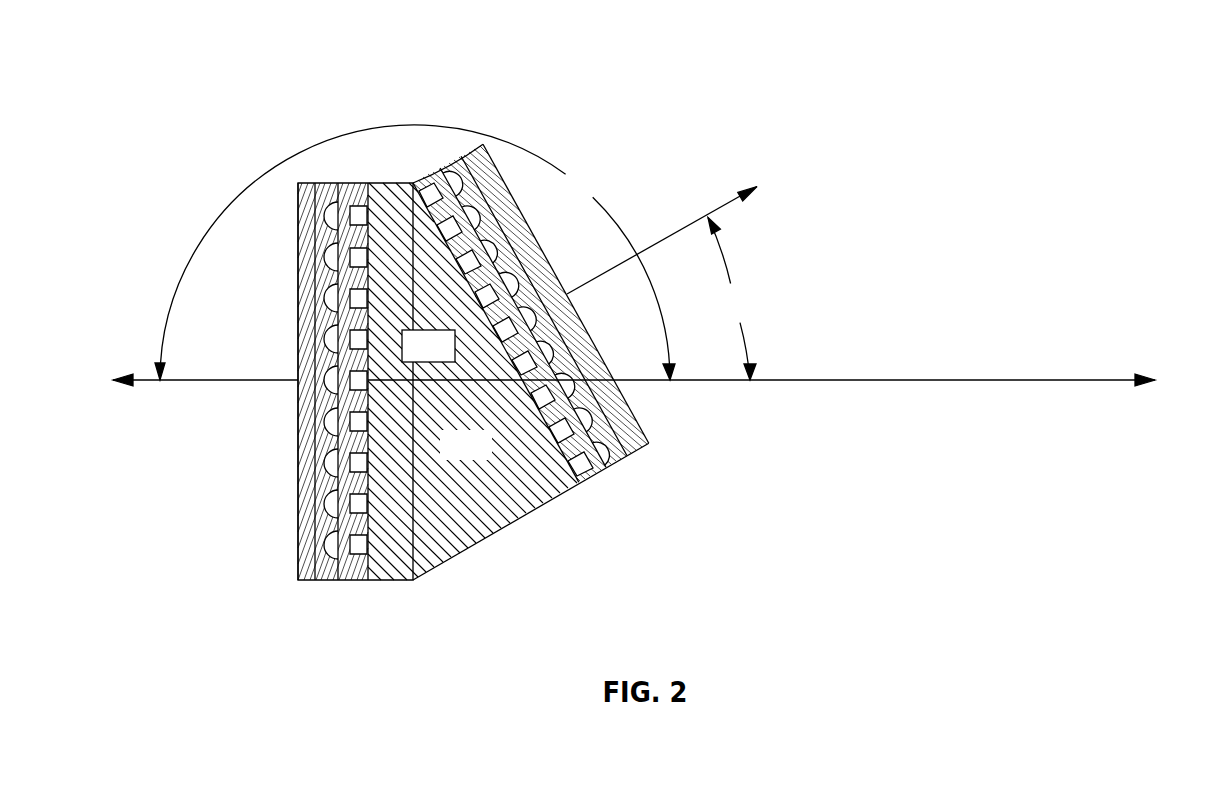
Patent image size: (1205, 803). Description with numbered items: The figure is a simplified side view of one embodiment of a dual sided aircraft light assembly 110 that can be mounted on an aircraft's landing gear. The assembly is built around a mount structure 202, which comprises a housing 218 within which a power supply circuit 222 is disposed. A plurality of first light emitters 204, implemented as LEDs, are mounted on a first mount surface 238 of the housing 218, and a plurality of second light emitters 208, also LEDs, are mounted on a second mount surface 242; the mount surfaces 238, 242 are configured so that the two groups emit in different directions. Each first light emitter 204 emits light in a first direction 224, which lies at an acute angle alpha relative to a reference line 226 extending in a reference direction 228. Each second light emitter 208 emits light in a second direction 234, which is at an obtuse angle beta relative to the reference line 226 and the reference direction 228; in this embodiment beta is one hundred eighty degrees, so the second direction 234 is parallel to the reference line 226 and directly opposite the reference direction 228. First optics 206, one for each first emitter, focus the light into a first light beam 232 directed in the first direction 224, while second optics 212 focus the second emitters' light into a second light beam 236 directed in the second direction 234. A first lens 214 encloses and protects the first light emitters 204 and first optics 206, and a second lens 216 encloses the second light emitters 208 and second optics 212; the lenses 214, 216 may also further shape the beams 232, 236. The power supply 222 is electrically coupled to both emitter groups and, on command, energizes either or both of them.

The dual sided aircraft light assembly 110 is at (543, 105).
The mount structure 202 is at (388, 167).
The first light emitters 204 is at (593, 478).
The first optics 206 is at (612, 462).
The second light emitters 208 is at (358, 556).
The second optics 212 is at (327, 580).
The first lens 214 is at (638, 413).
The second lens 216 is at (300, 480).
The housing 218 is at (490, 458).
The power supply circuit 222 is at (428, 330).
The first direction 224 is at (740, 177).
The reference line 226 is at (897, 380).
The reference direction 228 is at (1143, 377).
The first light beam 232 is at (667, 231).
The second direction 234 is at (128, 378).
The second light beam 236 is at (248, 380).
The first mount surface 238 is at (482, 148).
The second mount surface 242 is at (322, 183).